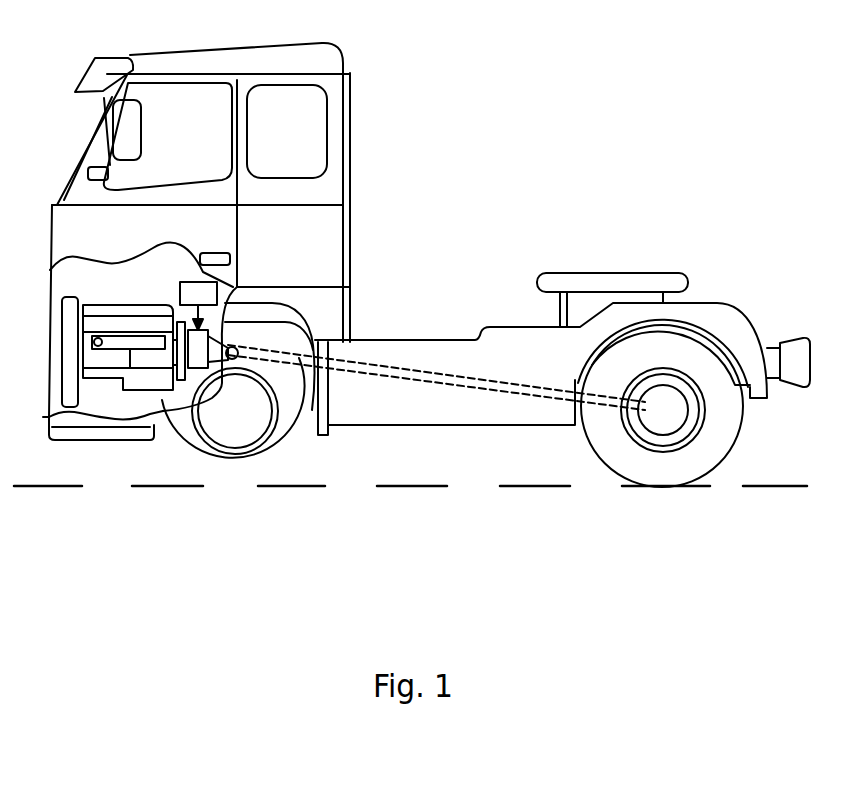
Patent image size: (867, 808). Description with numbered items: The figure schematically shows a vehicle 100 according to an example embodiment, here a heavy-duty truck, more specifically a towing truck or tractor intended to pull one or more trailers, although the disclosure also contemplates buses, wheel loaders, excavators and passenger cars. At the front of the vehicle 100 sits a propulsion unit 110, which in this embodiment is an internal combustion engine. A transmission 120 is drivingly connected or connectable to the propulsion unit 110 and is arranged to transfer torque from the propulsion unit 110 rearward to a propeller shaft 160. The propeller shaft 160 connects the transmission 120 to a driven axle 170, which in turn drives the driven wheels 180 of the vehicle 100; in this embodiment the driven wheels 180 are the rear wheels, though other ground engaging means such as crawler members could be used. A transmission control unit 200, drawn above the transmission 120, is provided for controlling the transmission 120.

The vehicle 100 is at (410, 316).
The propulsion unit 110 is at (157, 382).
The transmission 120 is at (198, 366).
The propeller shaft 160 is at (448, 386).
The driven axle 170 is at (665, 407).
The driven wheels 180 is at (670, 474).
The transmission control unit 200 is at (197, 292).